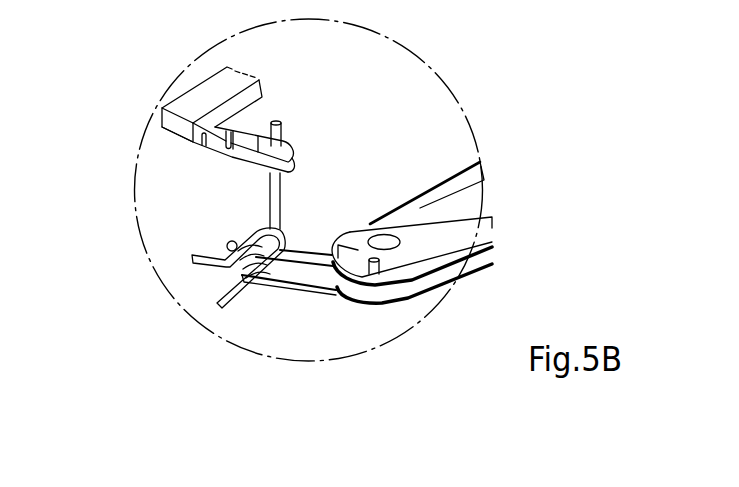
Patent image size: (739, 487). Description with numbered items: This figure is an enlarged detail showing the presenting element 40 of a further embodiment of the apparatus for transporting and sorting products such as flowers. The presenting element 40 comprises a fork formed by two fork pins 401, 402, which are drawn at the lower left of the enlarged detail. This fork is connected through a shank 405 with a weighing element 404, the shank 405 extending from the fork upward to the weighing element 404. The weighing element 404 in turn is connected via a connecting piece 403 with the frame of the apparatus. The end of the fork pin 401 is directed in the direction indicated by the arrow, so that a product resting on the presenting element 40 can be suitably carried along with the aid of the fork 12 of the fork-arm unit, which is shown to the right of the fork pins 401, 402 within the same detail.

The fork 12 is at (298, 290).
The presenting element 40 is at (205, 310).
The fork pin 401 is at (192, 259).
The fork pin 402 is at (233, 312).
The connecting piece 403 is at (180, 134).
The weighing element 404 is at (213, 153).
The shank 405 is at (287, 200).